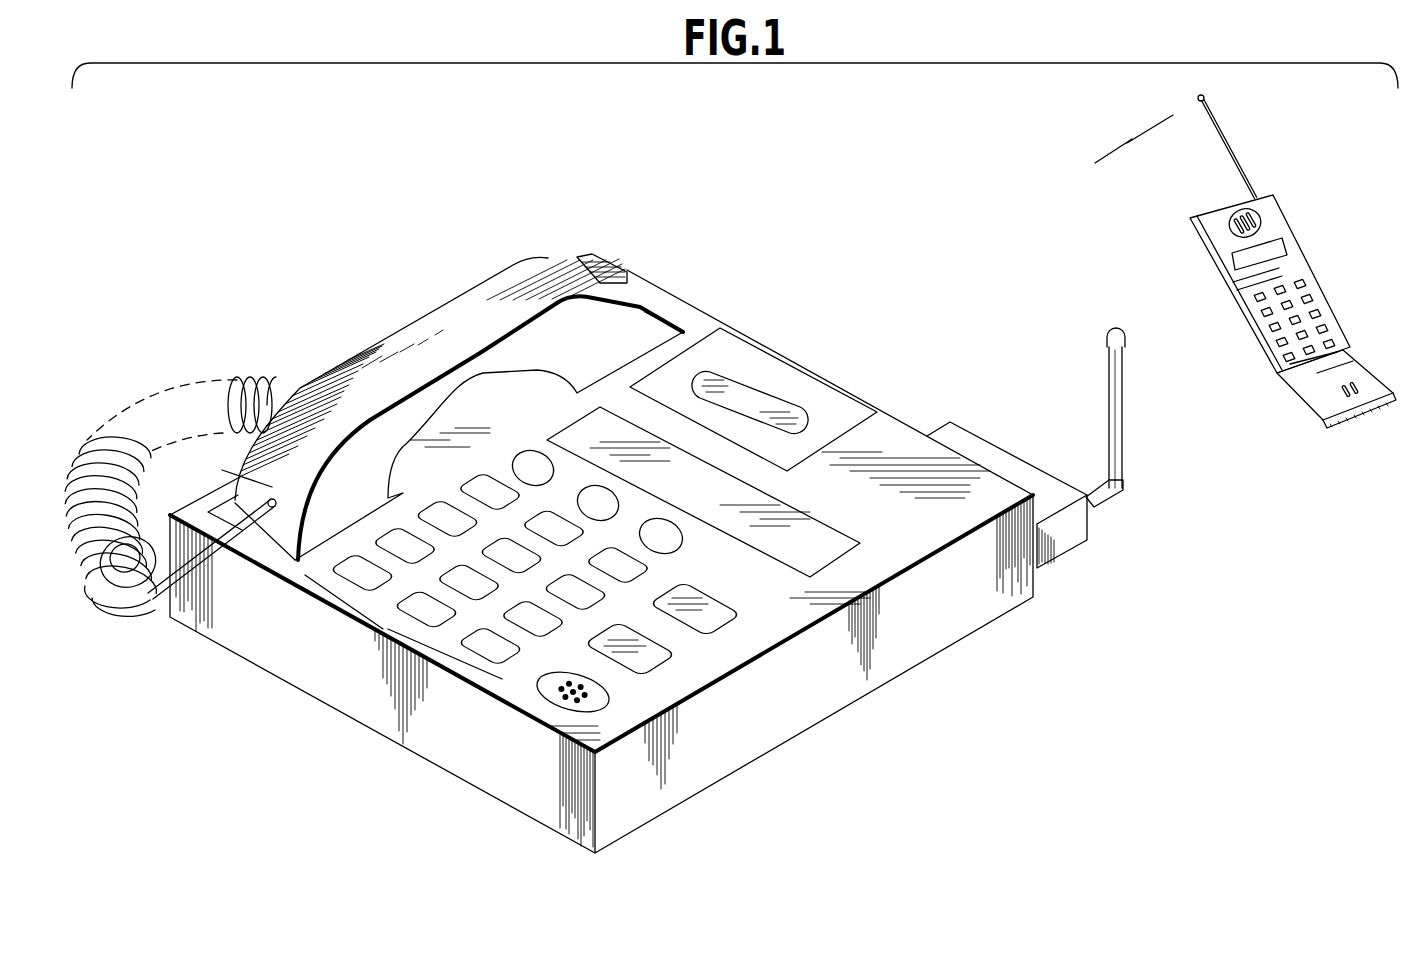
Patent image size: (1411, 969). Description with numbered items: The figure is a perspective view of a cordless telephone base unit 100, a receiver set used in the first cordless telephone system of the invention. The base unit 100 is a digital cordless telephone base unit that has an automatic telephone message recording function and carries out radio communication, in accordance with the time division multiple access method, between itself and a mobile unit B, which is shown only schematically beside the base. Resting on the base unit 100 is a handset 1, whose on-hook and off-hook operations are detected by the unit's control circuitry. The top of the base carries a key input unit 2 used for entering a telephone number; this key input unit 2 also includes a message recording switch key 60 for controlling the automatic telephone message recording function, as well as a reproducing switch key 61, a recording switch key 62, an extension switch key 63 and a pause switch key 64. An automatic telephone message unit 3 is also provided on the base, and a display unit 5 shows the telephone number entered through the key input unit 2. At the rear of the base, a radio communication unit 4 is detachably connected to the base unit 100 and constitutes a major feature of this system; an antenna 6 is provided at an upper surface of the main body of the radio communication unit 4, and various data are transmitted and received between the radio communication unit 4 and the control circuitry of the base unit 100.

The cordless telephone base unit 100 is at (828, 221).
The handset 1 is at (377, 368).
The key input unit 2 is at (387, 632).
The automatic telephone message unit 3 is at (881, 318).
The radio communication unit 4 is at (988, 455).
The display unit 5 is at (845, 557).
The antenna 6 is at (1120, 408).
The message recording switch key 60 is at (524, 452).
The reproducing switch key 61 is at (600, 497).
The recording switch key 62 is at (687, 547).
The extension switch key 63 is at (730, 618).
The pause switch key 64 is at (660, 667).
The mobile unit B is at (1290, 224).